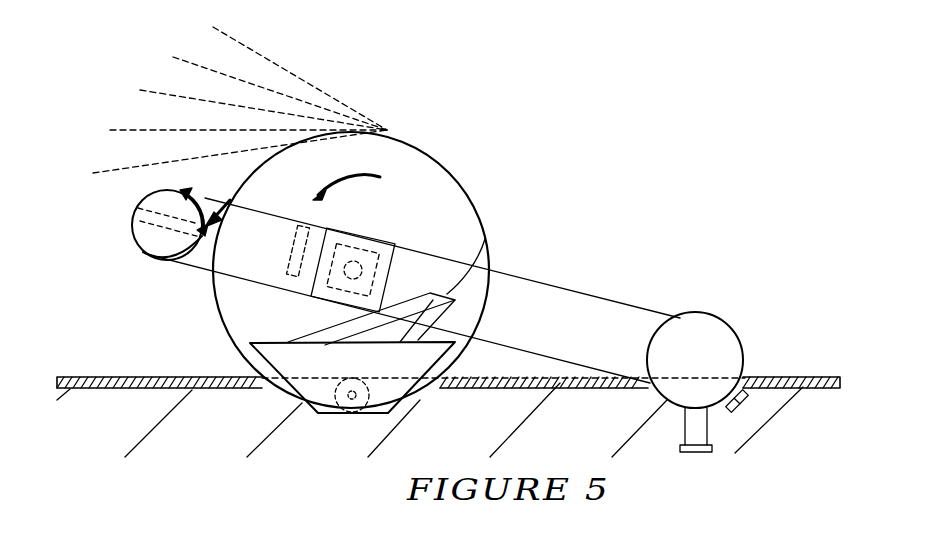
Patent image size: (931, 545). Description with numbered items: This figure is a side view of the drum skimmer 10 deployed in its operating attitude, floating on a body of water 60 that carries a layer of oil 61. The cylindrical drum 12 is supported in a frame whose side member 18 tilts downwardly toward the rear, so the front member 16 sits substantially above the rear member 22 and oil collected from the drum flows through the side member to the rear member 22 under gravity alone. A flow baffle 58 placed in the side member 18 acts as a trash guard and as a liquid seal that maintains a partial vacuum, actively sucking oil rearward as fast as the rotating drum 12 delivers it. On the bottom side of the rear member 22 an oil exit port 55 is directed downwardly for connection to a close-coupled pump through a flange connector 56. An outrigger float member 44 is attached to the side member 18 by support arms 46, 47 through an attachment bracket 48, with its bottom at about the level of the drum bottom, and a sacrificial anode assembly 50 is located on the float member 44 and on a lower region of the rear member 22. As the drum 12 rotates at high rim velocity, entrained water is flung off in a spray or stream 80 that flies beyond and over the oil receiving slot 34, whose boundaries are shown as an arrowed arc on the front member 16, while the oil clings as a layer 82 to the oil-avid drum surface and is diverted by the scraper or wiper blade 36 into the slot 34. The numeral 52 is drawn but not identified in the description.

The drum skimmer 10 is at (577, 191).
The cylindrical drum 12 is at (227, 288).
The front member 16 is at (143, 228).
The side member 18 is at (550, 312).
The rear member 22 is at (683, 330).
The oil receiving slot 34 is at (143, 230).
The scraper or wiper blade 36 is at (147, 247).
The float member 44 is at (285, 372).
The support arm 46 is at (310, 320).
The support arm 47 is at (265, 357).
The attachment bracket 48 is at (485, 239).
The sacrificial anode assembly 50 is at (354, 412).
The arrow path 52 is at (157, 212).
The oil exit port 55 is at (693, 420).
The flange connector 56 is at (695, 452).
The flow baffle 58 is at (217, 272).
The body of water 60 is at (465, 448).
The layer of oil 61 is at (168, 388).
The spray or stream 80 is at (267, 61).
The layer 82 is at (230, 200).